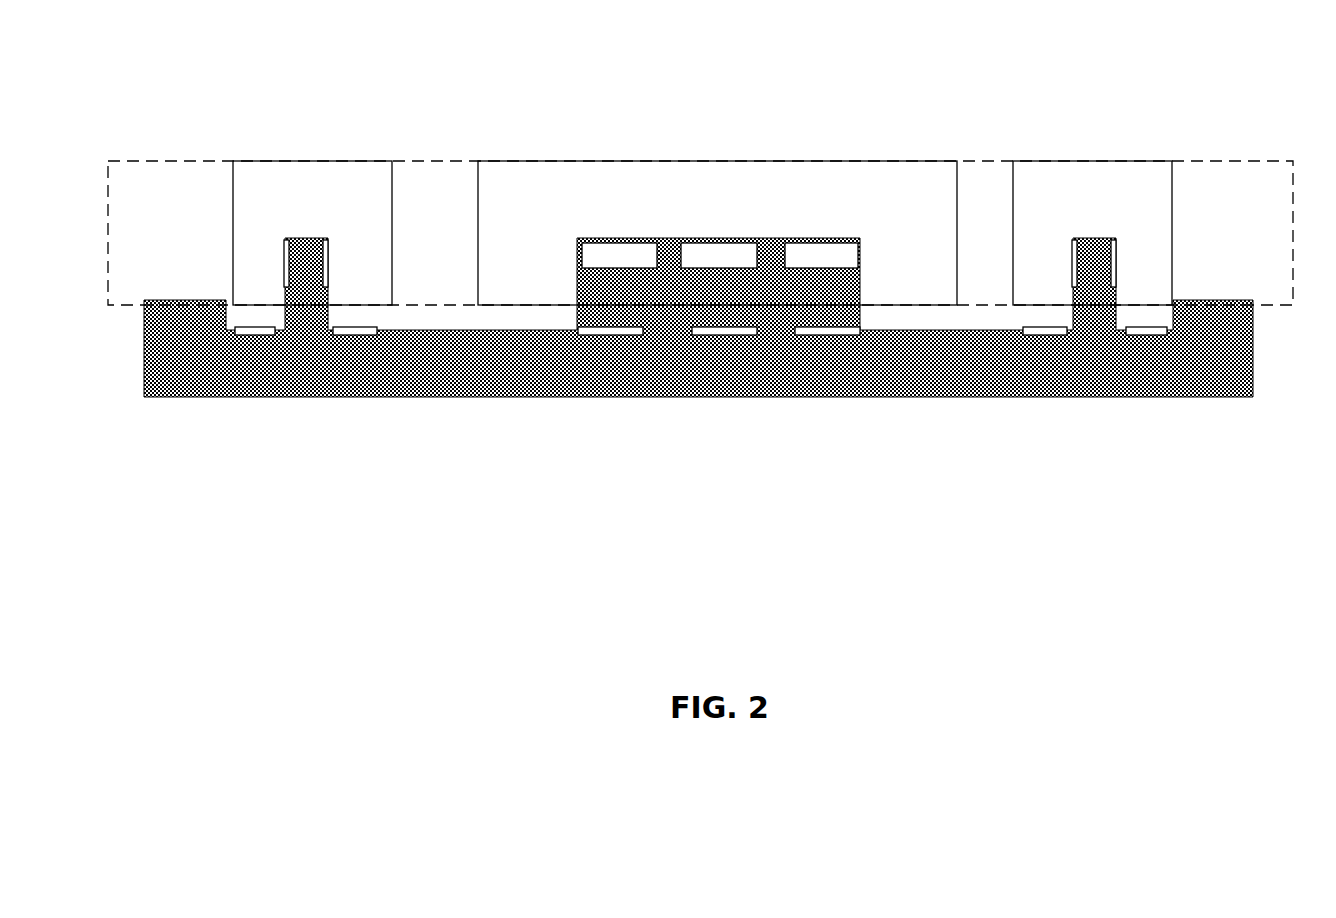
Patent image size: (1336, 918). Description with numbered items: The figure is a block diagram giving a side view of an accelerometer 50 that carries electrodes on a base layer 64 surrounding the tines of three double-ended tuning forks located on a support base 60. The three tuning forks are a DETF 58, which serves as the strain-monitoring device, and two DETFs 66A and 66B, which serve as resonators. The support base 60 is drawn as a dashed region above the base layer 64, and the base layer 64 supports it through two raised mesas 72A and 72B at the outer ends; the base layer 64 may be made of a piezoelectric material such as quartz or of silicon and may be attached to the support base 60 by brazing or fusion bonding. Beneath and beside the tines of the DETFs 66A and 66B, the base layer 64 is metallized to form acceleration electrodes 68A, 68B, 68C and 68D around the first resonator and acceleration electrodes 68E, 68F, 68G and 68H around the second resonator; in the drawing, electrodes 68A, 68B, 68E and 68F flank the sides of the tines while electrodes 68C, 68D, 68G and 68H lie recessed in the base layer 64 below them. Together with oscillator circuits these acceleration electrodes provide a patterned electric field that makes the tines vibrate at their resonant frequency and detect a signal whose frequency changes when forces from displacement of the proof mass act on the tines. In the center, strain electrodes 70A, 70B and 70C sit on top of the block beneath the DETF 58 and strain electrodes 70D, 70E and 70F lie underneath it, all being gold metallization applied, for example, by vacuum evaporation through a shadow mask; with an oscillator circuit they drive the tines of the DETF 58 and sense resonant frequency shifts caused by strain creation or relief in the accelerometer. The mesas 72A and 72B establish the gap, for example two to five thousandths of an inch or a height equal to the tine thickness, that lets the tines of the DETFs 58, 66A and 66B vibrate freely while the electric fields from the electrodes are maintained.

The accelerometer 50 is at (254, 77).
The double-ended tuning fork 58 is at (731, 226).
The support base 60 is at (443, 160).
The base layer 64 is at (790, 398).
The double-ended tuning fork 66A is at (332, 224).
The double-ended tuning fork 66B is at (1113, 224).
The acceleration electrode 68A is at (283, 258).
The acceleration electrode 68B is at (330, 258).
The acceleration electrode 68C is at (247, 338).
The acceleration electrode 68D is at (366, 338).
The acceleration electrode 68E is at (1074, 258).
The acceleration electrode 68F is at (1117, 258).
The acceleration electrode 68G is at (1030, 338).
The acceleration electrode 68H is at (1148, 338).
The strain electrode 70A is at (627, 247).
The strain electrode 70B is at (717, 247).
The strain electrode 70C is at (805, 247).
The strain electrode 70D is at (586, 338).
The strain electrode 70E is at (700, 338).
The strain electrode 70F is at (853, 338).
The mesa 72A is at (197, 300).
The mesa 72B is at (1210, 300).